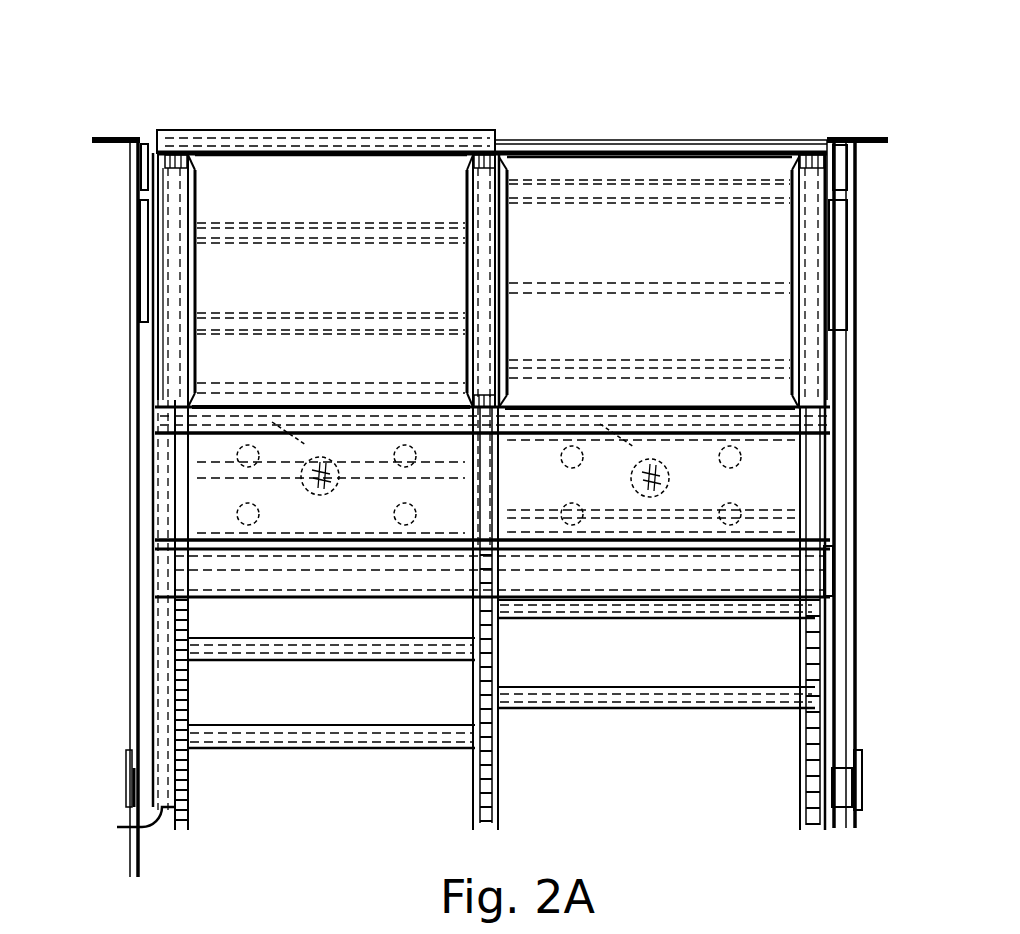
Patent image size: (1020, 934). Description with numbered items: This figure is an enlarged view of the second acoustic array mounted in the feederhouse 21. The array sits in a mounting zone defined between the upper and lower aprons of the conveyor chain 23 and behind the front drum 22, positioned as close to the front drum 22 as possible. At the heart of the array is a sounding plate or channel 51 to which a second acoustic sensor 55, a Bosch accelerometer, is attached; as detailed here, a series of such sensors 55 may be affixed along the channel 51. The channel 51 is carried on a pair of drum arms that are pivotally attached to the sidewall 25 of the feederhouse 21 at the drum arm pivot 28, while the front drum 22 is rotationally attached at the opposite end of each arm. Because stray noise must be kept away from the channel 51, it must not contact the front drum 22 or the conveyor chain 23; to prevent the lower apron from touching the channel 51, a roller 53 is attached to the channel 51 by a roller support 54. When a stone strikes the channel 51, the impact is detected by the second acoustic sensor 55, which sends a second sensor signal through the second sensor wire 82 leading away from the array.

The feederhouse 21 is at (213, 82).
The front drum 22 is at (662, 245).
The conveyor chain 23 is at (190, 798).
The sidewall 25 is at (132, 386).
The drum arm pivot 28 is at (126, 781).
The sounding plate or channel 51 is at (780, 473).
The roller 53 is at (693, 583).
The roller support 54 is at (830, 566).
The second acoustic sensor 55 is at (322, 486).
The second sensor wire 82 is at (123, 823).